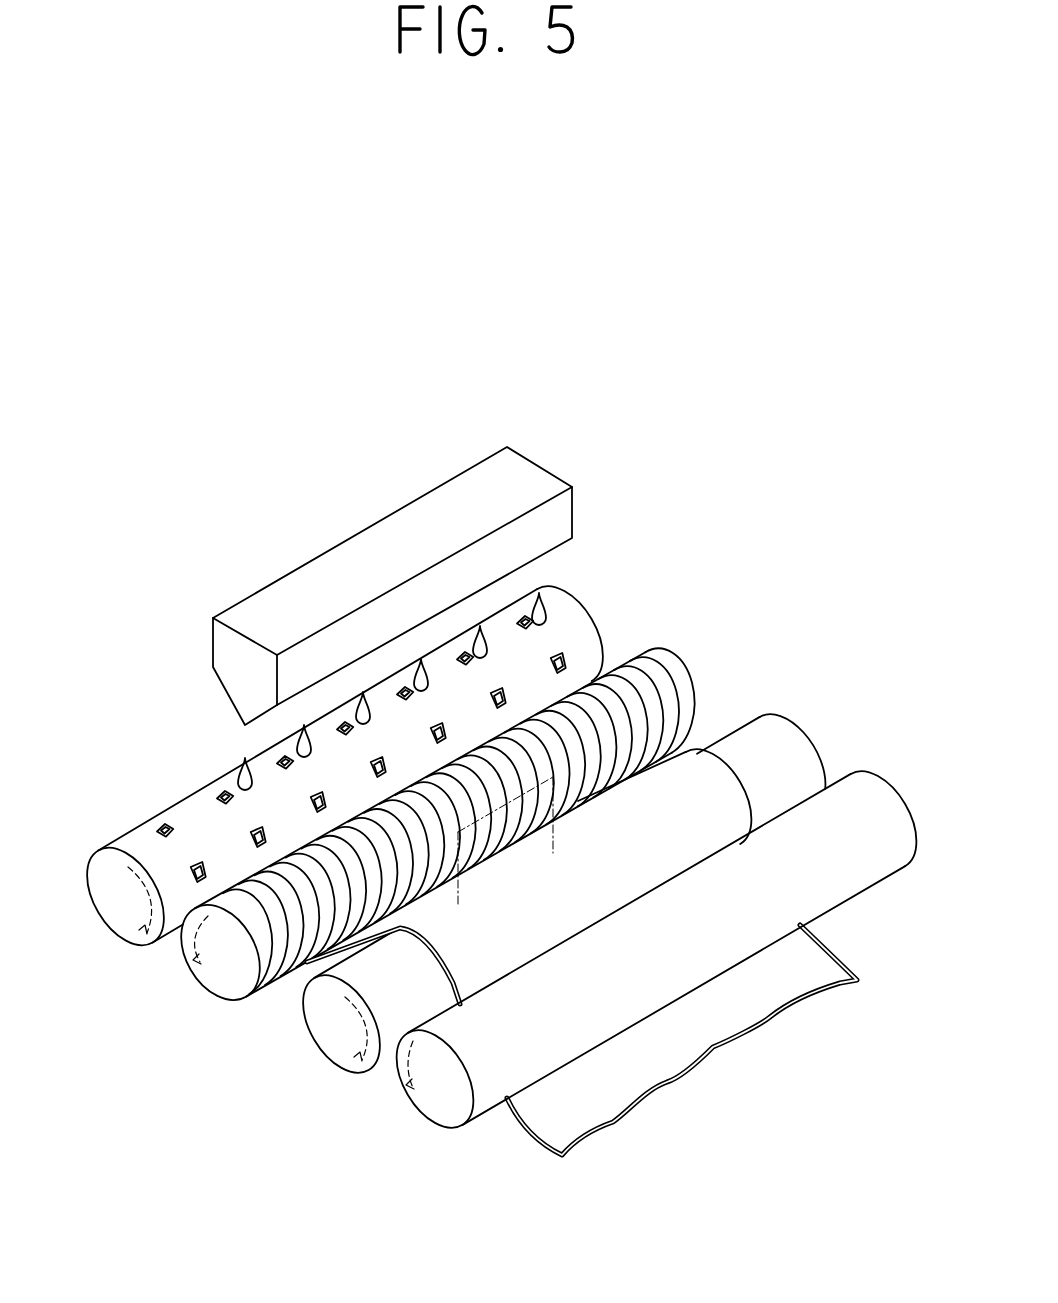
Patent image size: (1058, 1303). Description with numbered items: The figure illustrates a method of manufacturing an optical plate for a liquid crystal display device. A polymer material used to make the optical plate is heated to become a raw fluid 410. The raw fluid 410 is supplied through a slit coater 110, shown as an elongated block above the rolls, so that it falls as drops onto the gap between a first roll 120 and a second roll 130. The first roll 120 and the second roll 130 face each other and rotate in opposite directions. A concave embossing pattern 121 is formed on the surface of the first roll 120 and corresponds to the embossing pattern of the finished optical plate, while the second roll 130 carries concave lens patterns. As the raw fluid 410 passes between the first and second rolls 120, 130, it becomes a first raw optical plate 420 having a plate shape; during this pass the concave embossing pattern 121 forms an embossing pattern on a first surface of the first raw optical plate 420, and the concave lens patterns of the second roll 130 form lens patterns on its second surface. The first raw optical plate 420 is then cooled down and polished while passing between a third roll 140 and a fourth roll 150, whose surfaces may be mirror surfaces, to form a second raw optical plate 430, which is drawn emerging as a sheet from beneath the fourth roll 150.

The ink supply unit 110 is at (432, 488).
The anilox roller 120 is at (110, 930).
The cells 121 is at (158, 824).
The coil roller 130 is at (201, 986).
The transfer roller 140 is at (328, 1054).
The pressure roller 150 is at (420, 1110).
The ink drops 410 is at (547, 594).
The feed roller 420 is at (712, 770).
The substrate sheet 430 is at (698, 1068).